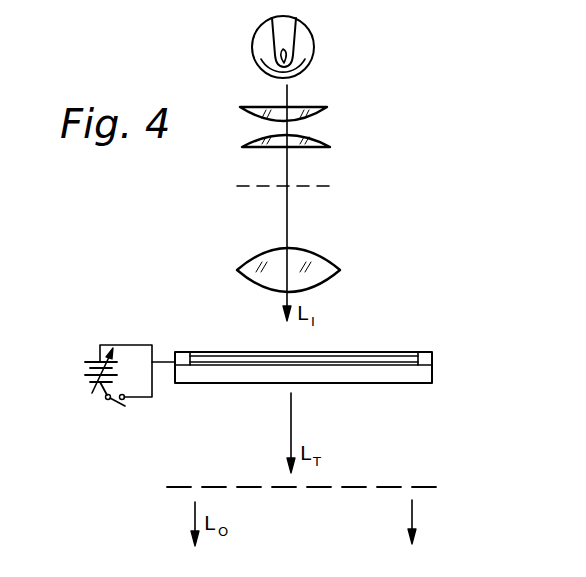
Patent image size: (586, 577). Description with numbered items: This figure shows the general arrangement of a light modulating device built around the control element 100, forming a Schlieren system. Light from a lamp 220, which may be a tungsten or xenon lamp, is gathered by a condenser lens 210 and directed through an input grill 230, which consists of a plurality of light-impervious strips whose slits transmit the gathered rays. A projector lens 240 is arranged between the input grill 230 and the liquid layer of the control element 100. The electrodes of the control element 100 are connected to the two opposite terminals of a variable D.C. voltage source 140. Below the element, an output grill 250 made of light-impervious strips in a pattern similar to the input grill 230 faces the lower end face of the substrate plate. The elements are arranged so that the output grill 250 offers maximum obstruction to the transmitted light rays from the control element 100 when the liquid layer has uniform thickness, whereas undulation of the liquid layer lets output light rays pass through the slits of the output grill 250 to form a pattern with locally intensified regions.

The lamp 220 is at (314, 45).
The condenser lens 210 is at (322, 123).
The input grill 230 is at (331, 186).
The projector lens 240 is at (330, 258).
The control element 100 is at (400, 347).
The D.C. voltage source 140 is at (87, 368).
The output grill 250 is at (437, 487).